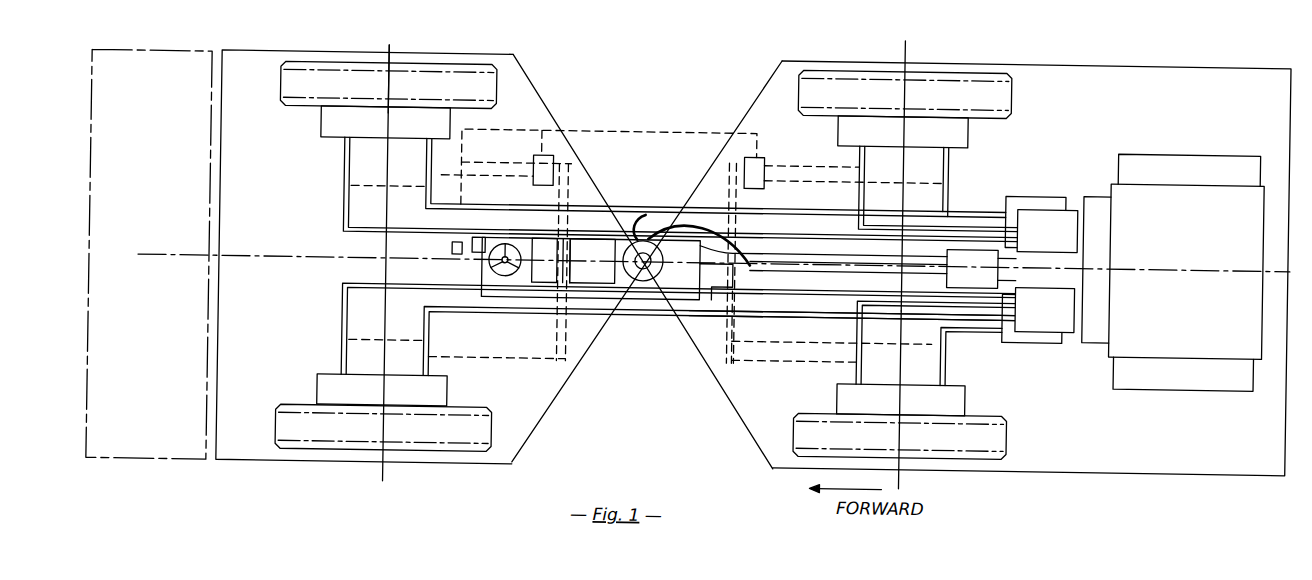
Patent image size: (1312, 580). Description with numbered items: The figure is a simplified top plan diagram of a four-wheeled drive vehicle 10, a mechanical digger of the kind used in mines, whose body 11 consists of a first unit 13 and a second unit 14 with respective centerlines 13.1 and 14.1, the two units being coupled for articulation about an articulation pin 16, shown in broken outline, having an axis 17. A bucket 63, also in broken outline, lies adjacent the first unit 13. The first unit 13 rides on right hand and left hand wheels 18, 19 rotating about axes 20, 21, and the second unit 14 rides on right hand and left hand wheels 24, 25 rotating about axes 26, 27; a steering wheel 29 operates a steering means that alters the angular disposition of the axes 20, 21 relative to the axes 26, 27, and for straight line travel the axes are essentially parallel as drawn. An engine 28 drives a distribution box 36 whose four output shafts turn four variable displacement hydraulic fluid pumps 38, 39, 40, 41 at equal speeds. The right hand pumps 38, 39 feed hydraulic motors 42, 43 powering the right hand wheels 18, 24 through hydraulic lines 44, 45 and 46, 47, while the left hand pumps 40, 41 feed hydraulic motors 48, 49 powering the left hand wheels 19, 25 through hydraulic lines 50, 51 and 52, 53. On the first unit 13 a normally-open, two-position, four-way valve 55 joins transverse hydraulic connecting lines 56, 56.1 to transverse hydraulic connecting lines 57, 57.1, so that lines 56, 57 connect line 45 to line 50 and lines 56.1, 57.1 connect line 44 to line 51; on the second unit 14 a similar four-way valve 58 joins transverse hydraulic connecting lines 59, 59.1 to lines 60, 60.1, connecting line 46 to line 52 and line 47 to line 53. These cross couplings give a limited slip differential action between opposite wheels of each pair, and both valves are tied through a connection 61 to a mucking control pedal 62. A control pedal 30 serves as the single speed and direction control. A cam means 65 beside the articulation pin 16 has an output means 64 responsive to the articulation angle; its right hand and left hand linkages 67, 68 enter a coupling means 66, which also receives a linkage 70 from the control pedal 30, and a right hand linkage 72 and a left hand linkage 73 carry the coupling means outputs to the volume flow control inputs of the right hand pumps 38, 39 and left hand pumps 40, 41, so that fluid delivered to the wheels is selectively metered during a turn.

The vehicle 10 is at (545, 56).
The body 11 is at (752, 70).
The first unit 13 is at (283, 48).
The centerline 13.1 is at (287, 253).
The second unit 14 is at (1074, 49).
The centerline 14.1 is at (1161, 255).
The articulation pin 16 is at (624, 261).
The axis 17 is at (623, 247).
The right hand wheel 18 is at (468, 76).
The left hand wheel 19 is at (463, 436).
The axis 20 is at (384, 49).
The axis 21 is at (382, 464).
The right hand wheel 24 is at (998, 80).
The left hand wheel 25 is at (992, 423).
The axis 26 is at (904, 41).
The axis 27 is at (904, 464).
The engine 28 is at (1186, 272).
The steering wheel 29 is at (523, 234).
The control pedal 30 is at (494, 226).
The distribution box 36 is at (1100, 188).
The hydraulic fluid pump 38 is at (1047, 231).
The hydraulic fluid pump 39 is at (1038, 184).
The hydraulic fluid pump 40 is at (1045, 310).
The hydraulic fluid pump 41 is at (1010, 319).
The hydraulic motor 42 is at (385, 122).
The hydraulic motor 43 is at (903, 132).
The hydraulic line 44 is at (343, 210).
The hydraulic line 45 is at (422, 193).
The hydraulic line 46 is at (852, 148).
The hydraulic line 47 is at (947, 152).
The hydraulic motor 48 is at (382, 390).
The hydraulic motor 49 is at (901, 400).
The hydraulic line 50 is at (453, 310).
The hydraulic line 51 is at (422, 276).
The hydraulic line 52 is at (858, 366).
The hydraulic line 53 is at (947, 354).
The four-way valve 55 is at (532, 165).
The transverse hydraulic connecting line 56 is at (435, 153).
The transverse hydraulic connecting line 56.1 is at (330, 184).
The transverse hydraulic connecting line 57 is at (467, 358).
The transverse hydraulic connecting line 57.1 is at (348, 330).
The four-way valve 58 is at (748, 159).
The transverse hydraulic connecting line 59 is at (814, 163).
The transverse hydraulic connecting line 59.1 is at (943, 176).
The transverse hydraulic connecting line 60 is at (738, 352).
The transverse hydraulic connecting line 60.1 is at (802, 328).
The connection 61 is at (614, 132).
The mucking control pedal 62 is at (452, 242).
The bucket 63 is at (149, 254).
The output means 64 is at (650, 230).
The cam means 65 is at (637, 208).
The coupling means 66 is at (947, 242).
The right hand linkage 67 is at (754, 244).
The left hand linkage 68 is at (756, 264).
The linkage 70 is at (738, 290).
The right hand linkage 72 is at (1016, 250).
The left hand linkage 73 is at (1016, 268).